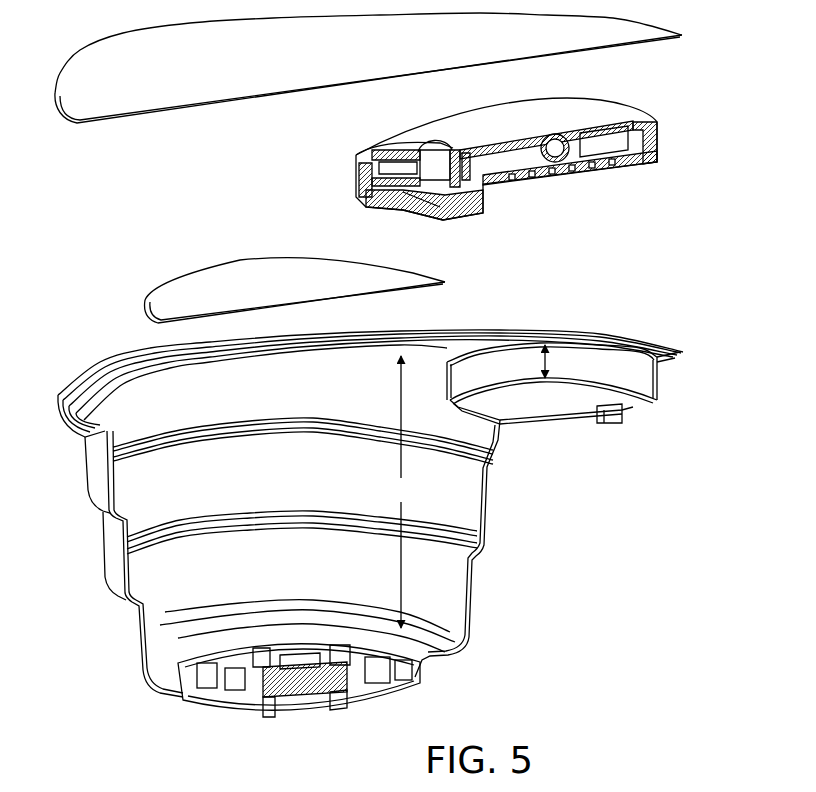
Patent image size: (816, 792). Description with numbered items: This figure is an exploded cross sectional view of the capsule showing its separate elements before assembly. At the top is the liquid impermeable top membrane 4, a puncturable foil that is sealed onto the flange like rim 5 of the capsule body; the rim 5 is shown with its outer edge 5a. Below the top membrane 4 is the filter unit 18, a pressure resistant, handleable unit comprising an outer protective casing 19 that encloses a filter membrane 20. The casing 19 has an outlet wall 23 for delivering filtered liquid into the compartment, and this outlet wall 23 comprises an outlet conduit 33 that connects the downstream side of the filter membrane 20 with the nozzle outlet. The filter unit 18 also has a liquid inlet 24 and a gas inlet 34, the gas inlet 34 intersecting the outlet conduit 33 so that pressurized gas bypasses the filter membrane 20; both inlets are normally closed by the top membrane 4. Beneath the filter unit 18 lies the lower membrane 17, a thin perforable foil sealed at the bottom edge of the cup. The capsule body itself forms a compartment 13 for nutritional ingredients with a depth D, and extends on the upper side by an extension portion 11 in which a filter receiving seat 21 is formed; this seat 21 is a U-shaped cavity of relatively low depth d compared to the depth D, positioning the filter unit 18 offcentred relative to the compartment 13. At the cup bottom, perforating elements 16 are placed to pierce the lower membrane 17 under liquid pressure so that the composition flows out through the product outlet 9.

The top membrane 4 is at (128, 60).
The flange like rim 5 is at (377, 530).
The bowl flange 5a is at (672, 348).
The product outlet 9 is at (313, 720).
The extension portion 11 is at (658, 410).
The compartment 13 is at (444, 582).
The perforating elements 16 is at (397, 682).
The lower membrane 17 is at (200, 280).
The filter unit 18 is at (347, 148).
The outer protective casing 19 is at (513, 159).
The filter membrane 20 is at (614, 128).
The filter receiving seat 21 is at (607, 368).
The outlet wall 23 is at (596, 182).
The liquid inlet 24 is at (558, 136).
The outlet conduit 33 is at (460, 206).
The gas inlet 34 is at (433, 142).
The depth of the compartment D is at (400, 492).
The depth of the filter receiving seat d is at (554, 361).